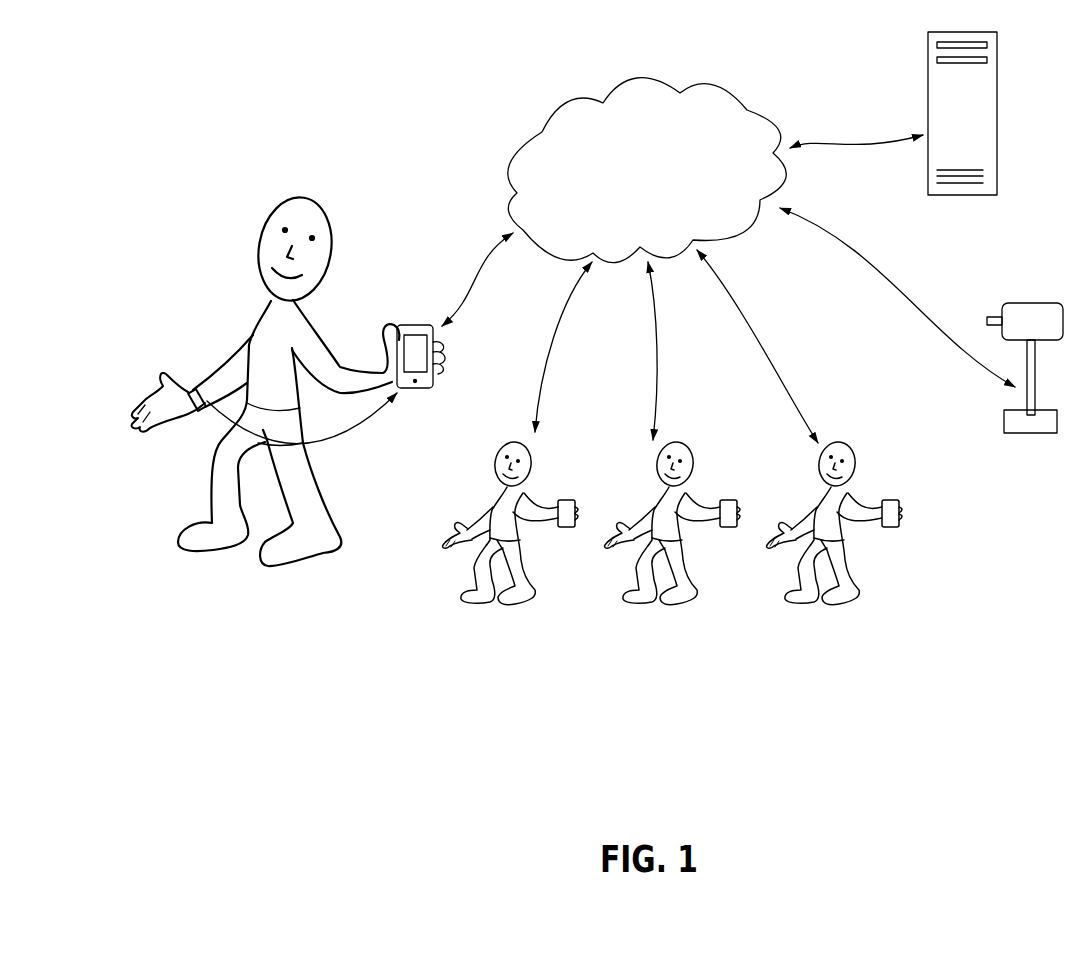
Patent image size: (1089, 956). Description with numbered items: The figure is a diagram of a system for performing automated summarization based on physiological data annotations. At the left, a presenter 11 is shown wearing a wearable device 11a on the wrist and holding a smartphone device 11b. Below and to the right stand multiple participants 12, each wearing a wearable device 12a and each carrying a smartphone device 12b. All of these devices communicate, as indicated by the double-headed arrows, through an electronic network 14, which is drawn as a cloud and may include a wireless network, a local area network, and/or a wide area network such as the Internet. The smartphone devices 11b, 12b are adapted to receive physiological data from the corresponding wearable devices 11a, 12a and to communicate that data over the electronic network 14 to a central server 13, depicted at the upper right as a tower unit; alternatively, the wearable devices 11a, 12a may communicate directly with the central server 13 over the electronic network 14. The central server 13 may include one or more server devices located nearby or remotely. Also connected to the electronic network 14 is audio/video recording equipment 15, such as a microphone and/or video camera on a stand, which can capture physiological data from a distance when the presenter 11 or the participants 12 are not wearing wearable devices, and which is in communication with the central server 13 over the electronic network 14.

The presenter 11 is at (257, 247).
The wearable device 11a is at (191, 390).
The smartphone device 11b is at (417, 323).
The participants 12 is at (477, 603).
The wearable devices 12a is at (470, 537).
The smartphone devices 12b is at (557, 498).
The central server 13 is at (927, 78).
The electronic network 14 is at (661, 207).
The audio/video recording equipment 15 is at (1023, 303).